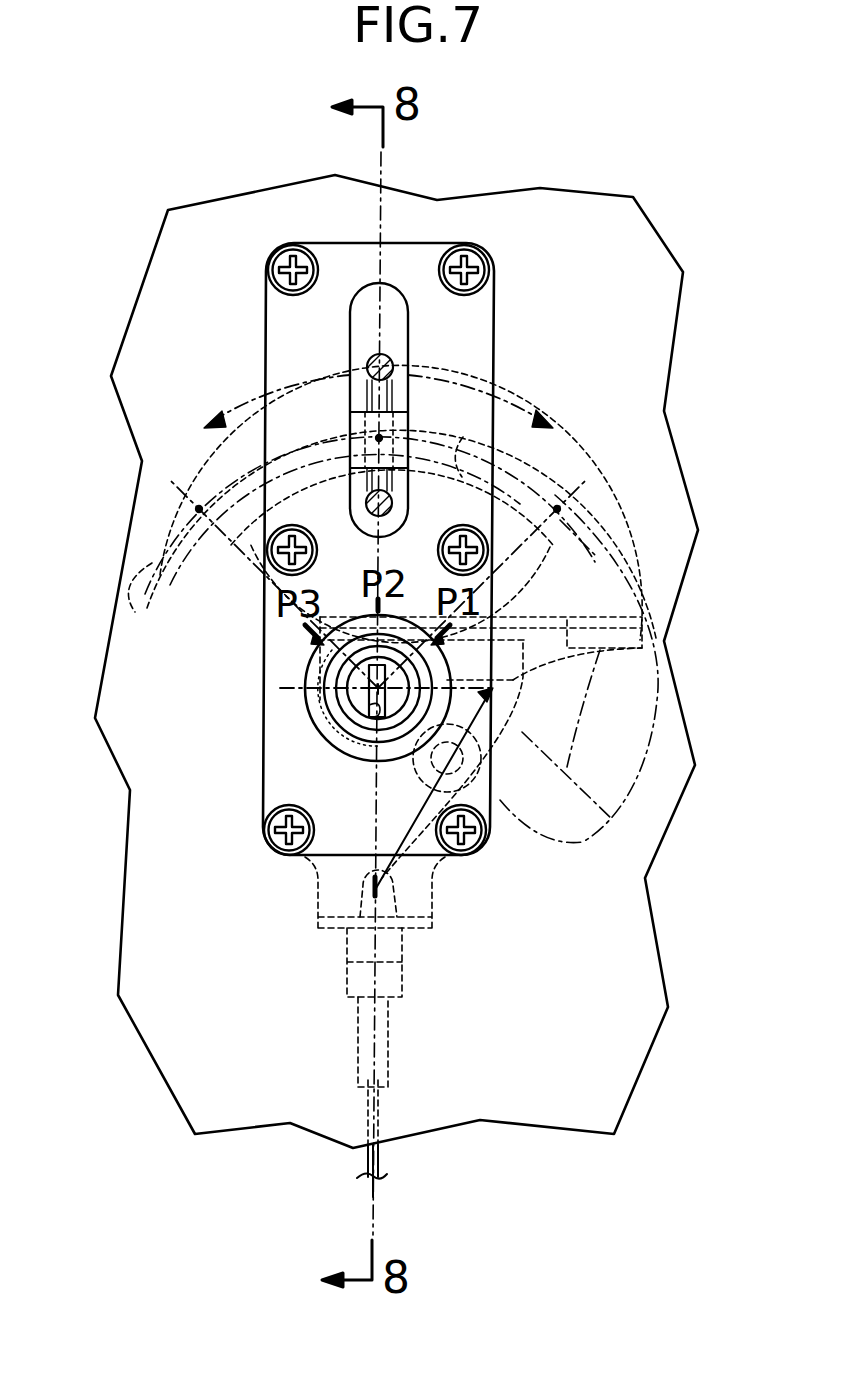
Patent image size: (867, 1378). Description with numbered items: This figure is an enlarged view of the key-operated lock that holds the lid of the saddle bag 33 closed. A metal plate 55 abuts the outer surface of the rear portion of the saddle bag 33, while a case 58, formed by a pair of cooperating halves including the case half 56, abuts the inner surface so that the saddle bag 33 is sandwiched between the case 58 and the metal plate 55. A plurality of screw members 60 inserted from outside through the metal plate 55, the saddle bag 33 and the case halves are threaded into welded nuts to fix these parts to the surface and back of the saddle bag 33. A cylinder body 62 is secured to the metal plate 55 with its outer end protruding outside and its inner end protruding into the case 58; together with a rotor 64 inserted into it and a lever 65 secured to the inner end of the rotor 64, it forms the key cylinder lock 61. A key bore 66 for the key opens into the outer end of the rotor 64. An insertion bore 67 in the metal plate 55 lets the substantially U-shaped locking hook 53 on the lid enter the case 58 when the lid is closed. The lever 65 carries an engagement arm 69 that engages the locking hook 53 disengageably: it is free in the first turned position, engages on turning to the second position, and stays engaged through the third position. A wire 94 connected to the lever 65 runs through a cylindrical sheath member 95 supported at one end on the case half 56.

The saddle bag 33 is at (157, 920).
The metal plate 55 is at (278, 790).
The screw members 60 is at (285, 262).
The insertion bore 67 is at (358, 352).
The engagement arm 69 is at (360, 418).
The locking hook 53 is at (388, 358).
The cylinder body 62 is at (318, 664).
The key cylinder lock 61 is at (310, 713).
The key bore 66 is at (377, 719).
The rotor 64 is at (398, 705).
The case 58 is at (421, 927).
The case half 56 is at (312, 898).
The cylindrical sheath member 95 is at (390, 1043).
The wire 94 is at (378, 1157).
The lever 65 is at (543, 688).